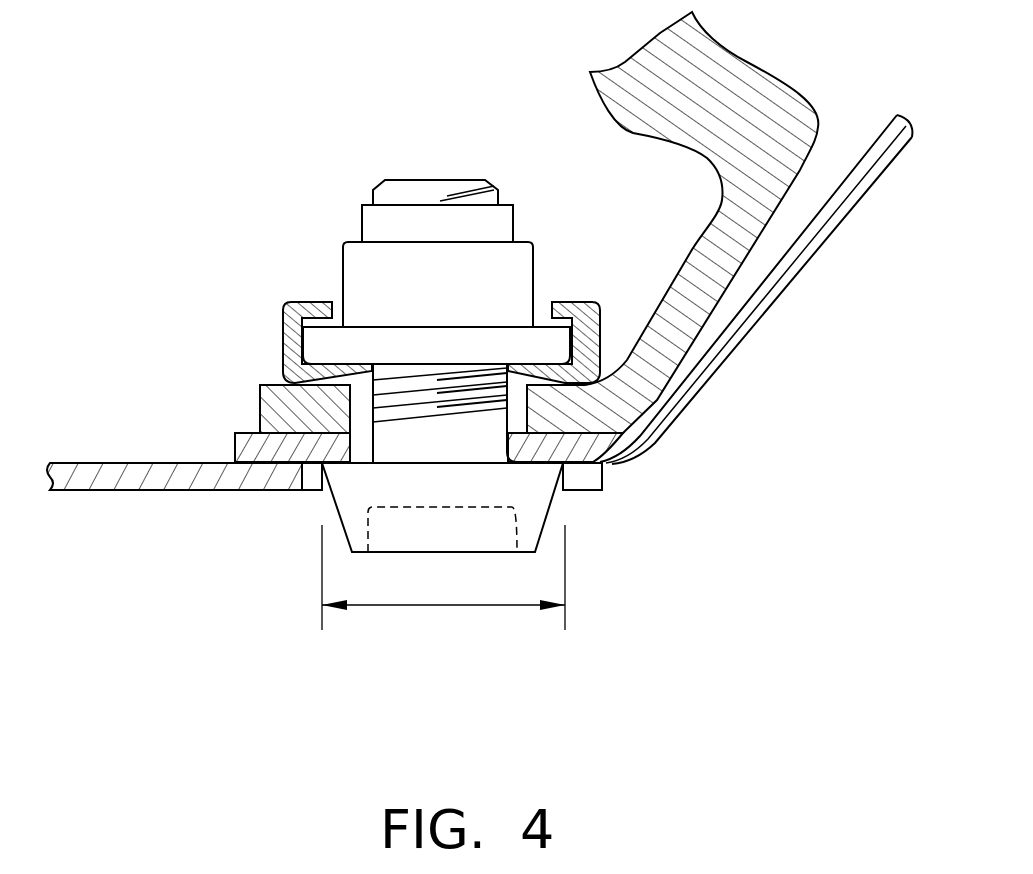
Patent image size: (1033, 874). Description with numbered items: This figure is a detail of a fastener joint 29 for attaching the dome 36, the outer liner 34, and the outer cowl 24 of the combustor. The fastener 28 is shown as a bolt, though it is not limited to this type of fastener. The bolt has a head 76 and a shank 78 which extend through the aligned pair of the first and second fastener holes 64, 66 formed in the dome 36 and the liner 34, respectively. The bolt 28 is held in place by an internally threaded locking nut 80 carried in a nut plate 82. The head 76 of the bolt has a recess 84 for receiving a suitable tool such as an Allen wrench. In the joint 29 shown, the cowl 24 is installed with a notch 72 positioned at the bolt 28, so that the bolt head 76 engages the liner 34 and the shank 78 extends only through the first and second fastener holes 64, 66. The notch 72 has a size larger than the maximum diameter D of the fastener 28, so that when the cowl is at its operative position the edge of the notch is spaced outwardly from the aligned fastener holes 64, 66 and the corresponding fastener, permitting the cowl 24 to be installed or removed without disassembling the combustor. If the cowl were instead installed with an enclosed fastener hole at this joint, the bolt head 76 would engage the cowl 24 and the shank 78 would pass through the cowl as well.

The outer cowl 24 is at (112, 462).
The fastener 28 is at (417, 178).
The joint 29 is at (451, 341).
The outer liner 34 is at (798, 270).
The dome 36 is at (697, 240).
The first fastener hole 64 is at (262, 388).
The second fastener hole 66 is at (365, 405).
The notch 72 is at (314, 482).
The head 76 is at (563, 500).
The shank 78 is at (632, 423).
The locking nut 80 is at (340, 259).
The nut plate 82 is at (287, 312).
The recess 84 is at (505, 534).
The maximum diameter D is at (465, 607).